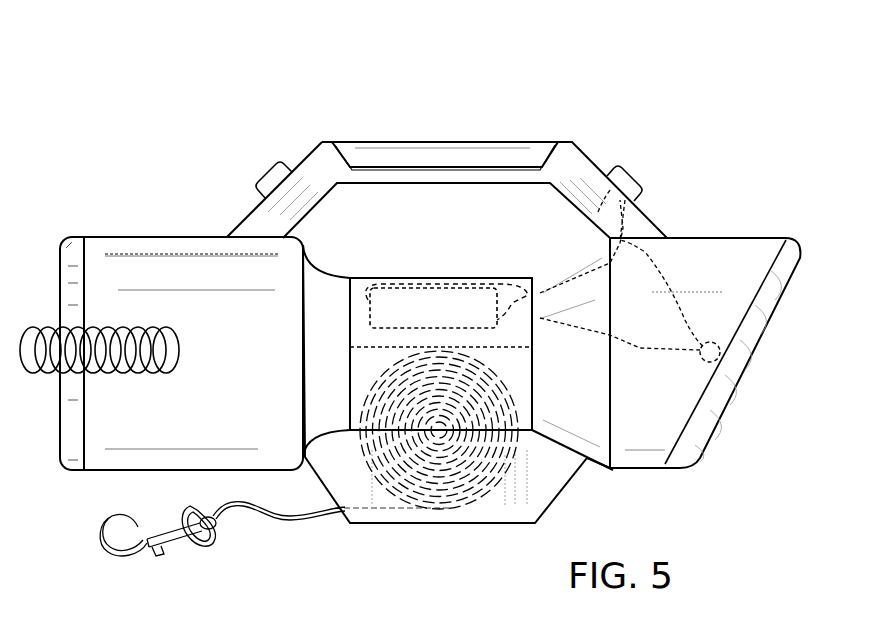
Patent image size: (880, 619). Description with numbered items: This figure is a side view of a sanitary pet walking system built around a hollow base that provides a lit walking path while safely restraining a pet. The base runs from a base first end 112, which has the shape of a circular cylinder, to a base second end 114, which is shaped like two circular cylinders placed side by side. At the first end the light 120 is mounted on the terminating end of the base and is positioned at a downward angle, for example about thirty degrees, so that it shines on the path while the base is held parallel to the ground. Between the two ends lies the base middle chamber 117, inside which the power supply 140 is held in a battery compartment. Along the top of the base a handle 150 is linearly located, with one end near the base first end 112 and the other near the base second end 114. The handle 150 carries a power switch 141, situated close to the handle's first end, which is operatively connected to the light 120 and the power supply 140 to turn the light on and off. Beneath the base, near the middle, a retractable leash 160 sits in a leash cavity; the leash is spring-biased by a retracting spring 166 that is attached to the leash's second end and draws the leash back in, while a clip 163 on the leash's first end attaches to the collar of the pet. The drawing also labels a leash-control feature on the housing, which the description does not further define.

The base first end 112 is at (727, 273).
The base second end 114 is at (213, 297).
The base middle chamber 117 is at (513, 335).
The light 120 is at (712, 356).
The power supply 140 is at (435, 303).
The power switch 141 is at (628, 182).
The handle 150 is at (400, 141).
The retractable leash 160 is at (293, 514).
The clip 163 is at (167, 545).
The retracting spring 166 is at (428, 492).
The leash control leash-control is at (278, 172).